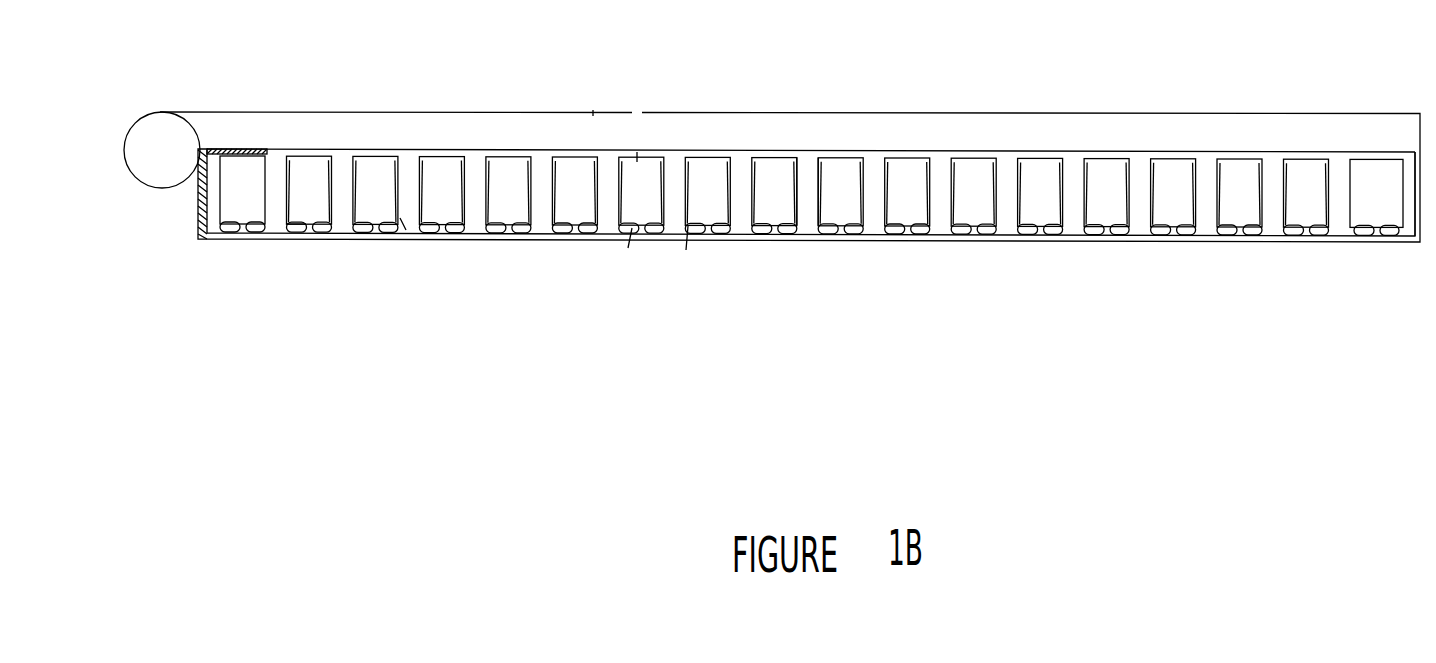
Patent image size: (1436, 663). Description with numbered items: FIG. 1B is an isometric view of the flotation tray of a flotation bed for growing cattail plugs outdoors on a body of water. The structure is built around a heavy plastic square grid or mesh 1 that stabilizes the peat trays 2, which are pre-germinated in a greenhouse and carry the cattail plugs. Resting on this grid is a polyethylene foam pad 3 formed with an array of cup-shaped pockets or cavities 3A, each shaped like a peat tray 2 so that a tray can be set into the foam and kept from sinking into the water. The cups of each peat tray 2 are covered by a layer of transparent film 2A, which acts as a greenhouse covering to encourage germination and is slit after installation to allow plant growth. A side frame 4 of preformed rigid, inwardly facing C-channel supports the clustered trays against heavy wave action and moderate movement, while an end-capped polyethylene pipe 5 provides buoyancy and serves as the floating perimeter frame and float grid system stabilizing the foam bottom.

The heavy plastic square grid or mesh 1 is at (818, 227).
The peat tray 2 is at (892, 178).
The transparent film 2A is at (977, 153).
The polyethylene foam pad 3 is at (803, 185).
The cups 3A is at (285, 214).
The side frame 4 is at (233, 142).
The polyethylene pipe 5 is at (145, 147).